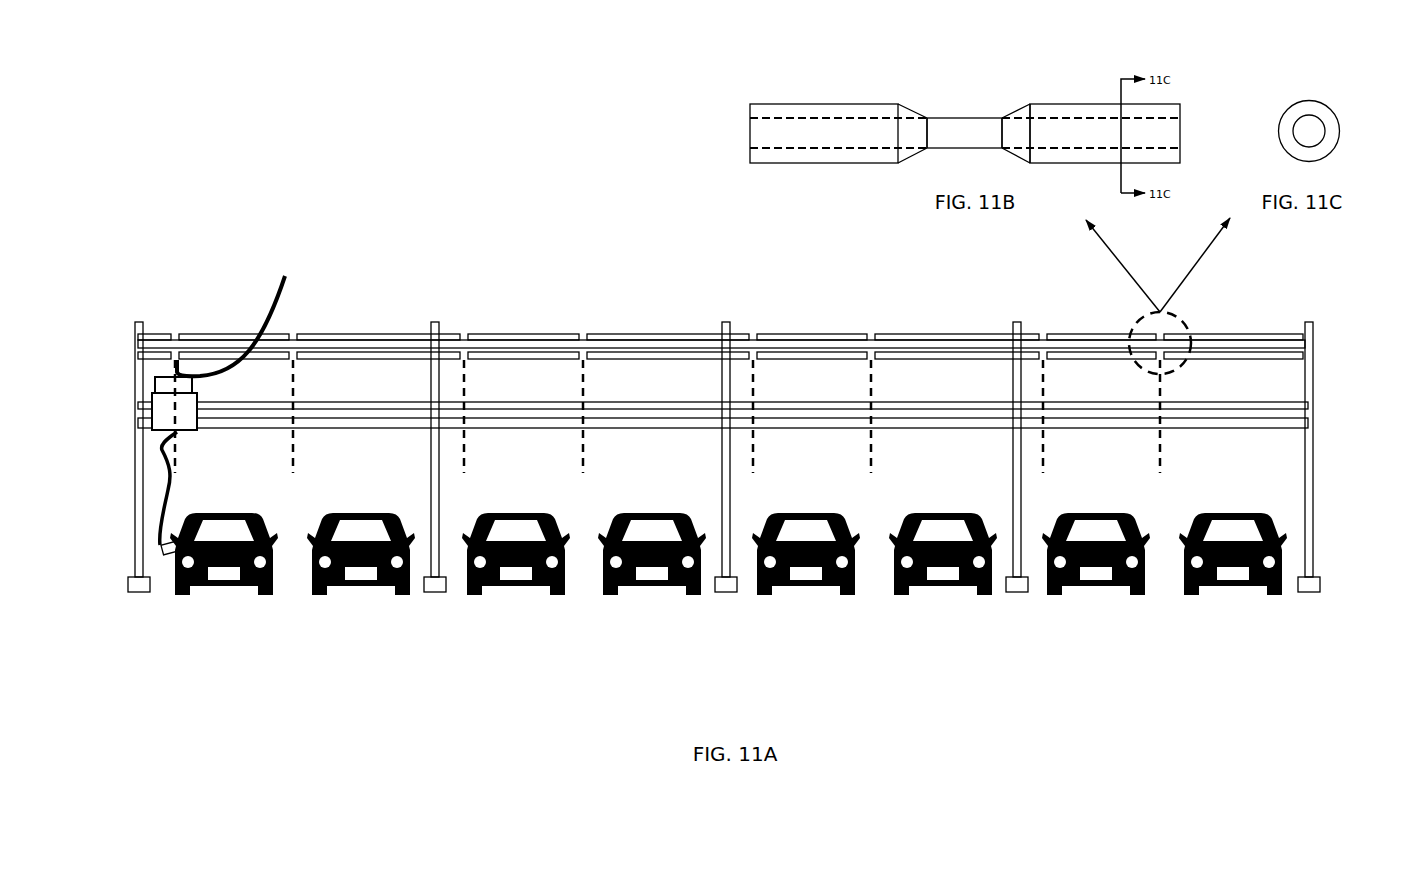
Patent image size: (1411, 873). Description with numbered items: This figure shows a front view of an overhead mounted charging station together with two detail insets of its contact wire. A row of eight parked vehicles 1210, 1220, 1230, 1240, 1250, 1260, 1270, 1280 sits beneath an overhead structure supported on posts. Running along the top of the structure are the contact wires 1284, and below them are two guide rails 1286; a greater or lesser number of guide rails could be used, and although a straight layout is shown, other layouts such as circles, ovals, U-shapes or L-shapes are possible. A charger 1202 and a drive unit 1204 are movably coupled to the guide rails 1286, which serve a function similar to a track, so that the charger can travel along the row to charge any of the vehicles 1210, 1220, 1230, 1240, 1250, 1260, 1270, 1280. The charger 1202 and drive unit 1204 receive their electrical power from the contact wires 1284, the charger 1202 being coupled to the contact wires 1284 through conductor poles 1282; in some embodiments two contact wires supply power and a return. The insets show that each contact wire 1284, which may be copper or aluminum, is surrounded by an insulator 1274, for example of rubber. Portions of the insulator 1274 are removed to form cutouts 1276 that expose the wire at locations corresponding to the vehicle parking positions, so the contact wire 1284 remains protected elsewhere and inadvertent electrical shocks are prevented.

In FIG. 11A, the charger 1202 is at (155, 381).
In FIG. 11A, the drive unit 1204 is at (198, 403).
In FIG. 11A, the vehicle 1210 is at (224, 589).
In FIG. 11A, the vehicle 1220 is at (361, 589).
In FIG. 11A, the vehicle 1230 is at (516, 589).
In FIG. 11A, the vehicle 1240 is at (652, 589).
In FIG. 11A, the vehicle 1250 is at (806, 589).
In FIG. 11A, the vehicle 1260 is at (943, 589).
In FIG. 11A, the vehicle 1270 is at (1096, 589).
In FIG. 11A, the vehicle 1280 is at (1233, 589).
In FIG. 11A, the insulator 1274 is at (238, 350).
In FIG. 11B, the insulator 1274 is at (793, 107).
In FIG. 11C, the insulator 1274 is at (1277, 125).
In FIG. 11A, the cutout 1276 is at (300, 328).
In FIG. 11B, the cutout 1276 is at (915, 113).
In FIG. 11A, the conductor pole 1282 is at (248, 311).
In FIG. 11A, the contact wire 1284 is at (752, 340).
In FIG. 11B, the contact wire 1284 is at (967, 117).
In FIG. 11C, the contact wire 1284 is at (1315, 136).
In FIG. 11A, the guide rail 1286 is at (940, 422).